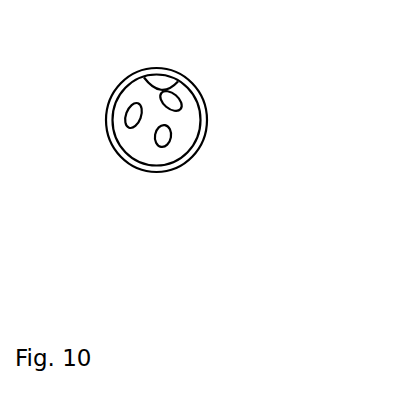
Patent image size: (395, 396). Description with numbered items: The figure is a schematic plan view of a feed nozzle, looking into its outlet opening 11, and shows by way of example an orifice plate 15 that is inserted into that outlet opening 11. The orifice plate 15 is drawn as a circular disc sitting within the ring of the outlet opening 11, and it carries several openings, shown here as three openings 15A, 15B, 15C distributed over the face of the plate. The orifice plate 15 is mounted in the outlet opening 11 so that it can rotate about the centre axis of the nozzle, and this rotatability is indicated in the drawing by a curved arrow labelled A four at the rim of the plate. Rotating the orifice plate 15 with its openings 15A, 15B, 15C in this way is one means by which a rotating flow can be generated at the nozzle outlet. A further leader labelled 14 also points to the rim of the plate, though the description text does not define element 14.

The ring / sleeve 14 is at (116, 71).
The orifice plate 15 is at (143, 149).
The outlet opening 11 is at (171, 81).
The opening 15A is at (181, 102).
The opening 15B is at (170, 133).
The opening 15C is at (127, 120).